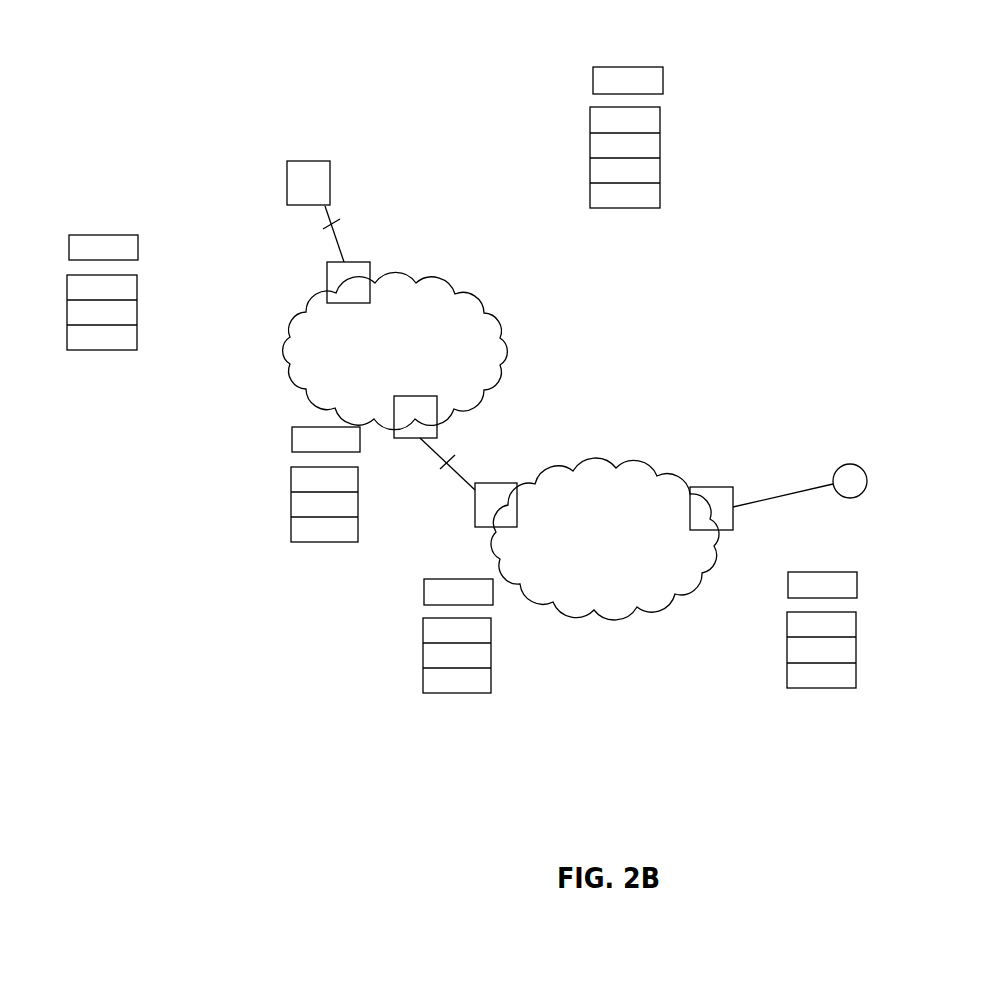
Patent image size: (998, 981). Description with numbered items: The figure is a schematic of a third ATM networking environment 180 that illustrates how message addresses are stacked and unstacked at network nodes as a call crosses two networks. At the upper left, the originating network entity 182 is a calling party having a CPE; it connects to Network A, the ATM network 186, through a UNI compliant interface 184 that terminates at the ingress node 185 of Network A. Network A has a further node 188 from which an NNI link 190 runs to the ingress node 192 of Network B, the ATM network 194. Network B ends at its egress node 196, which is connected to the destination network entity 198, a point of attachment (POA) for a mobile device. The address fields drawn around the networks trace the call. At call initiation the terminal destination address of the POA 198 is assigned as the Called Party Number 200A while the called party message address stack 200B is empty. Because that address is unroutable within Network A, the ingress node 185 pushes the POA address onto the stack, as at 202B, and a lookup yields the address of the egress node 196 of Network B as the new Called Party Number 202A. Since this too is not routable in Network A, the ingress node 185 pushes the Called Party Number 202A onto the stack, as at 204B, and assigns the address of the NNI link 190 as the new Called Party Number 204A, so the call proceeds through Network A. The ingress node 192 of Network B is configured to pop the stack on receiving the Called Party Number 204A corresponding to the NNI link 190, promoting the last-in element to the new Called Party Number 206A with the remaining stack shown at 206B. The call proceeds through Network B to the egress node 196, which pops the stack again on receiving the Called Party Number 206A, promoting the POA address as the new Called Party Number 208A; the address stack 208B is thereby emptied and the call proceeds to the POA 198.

The ATM networking environment 180 is at (289, 679).
The originating network entity 182 is at (290, 182).
The UNI compliant interface 184 is at (337, 222).
The ingress node 185 is at (338, 278).
The ATM network 186 is at (467, 327).
The egress switch of network A 188 is at (425, 432).
The NNI link 190 is at (443, 472).
The ingress node 192 is at (503, 492).
The ATM network 194 is at (632, 495).
The egress node 196 is at (718, 525).
The destination network entity 198 is at (860, 467).
The Called Party Number 200A is at (663, 68).
The called party message address stack 200B is at (660, 193).
The Called Party Number 202A is at (138, 243).
The message address stack 202B is at (137, 335).
The Called Party Number 204A is at (292, 437).
The message address stack 204B is at (291, 527).
The Called Party Number 206A is at (493, 597).
The message address stack 206B is at (491, 683).
The Called Party Number 208A is at (857, 574).
The address stack 208B is at (856, 669).